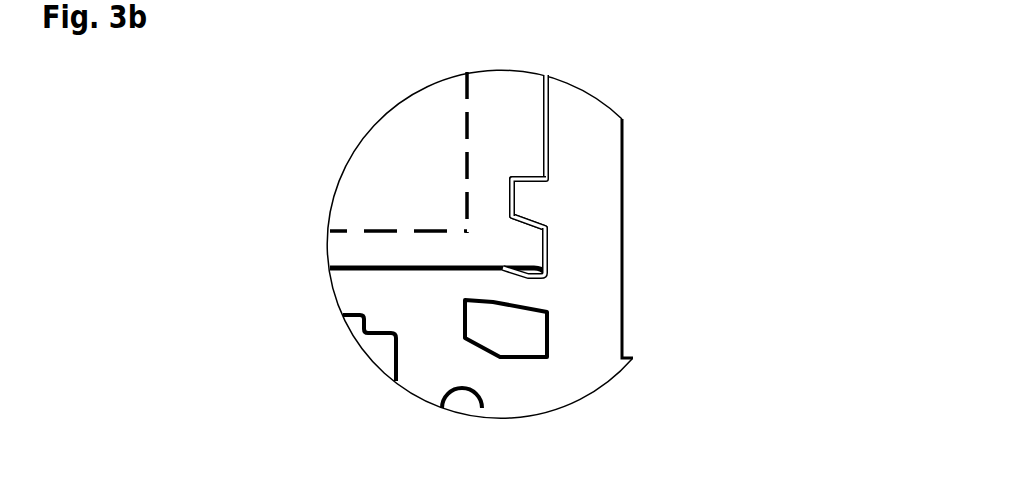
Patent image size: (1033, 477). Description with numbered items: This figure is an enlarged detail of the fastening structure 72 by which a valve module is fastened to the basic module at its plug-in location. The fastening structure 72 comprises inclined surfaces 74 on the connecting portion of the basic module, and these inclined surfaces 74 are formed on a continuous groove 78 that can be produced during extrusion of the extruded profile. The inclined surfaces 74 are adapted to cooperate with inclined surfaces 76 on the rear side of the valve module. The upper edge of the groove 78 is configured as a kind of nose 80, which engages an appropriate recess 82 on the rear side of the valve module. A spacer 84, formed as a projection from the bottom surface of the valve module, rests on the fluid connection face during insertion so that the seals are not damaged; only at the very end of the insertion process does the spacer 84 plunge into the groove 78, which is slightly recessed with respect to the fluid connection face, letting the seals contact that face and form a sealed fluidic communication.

The fastening structure 72 is at (790, 132).
The inclined surfaces 74 is at (544, 222).
The inclined surfaces 76 is at (544, 222).
The groove 78 is at (548, 255).
The nose 80 is at (528, 200).
The recess 82 is at (505, 200).
The spacer 84 is at (548, 268).